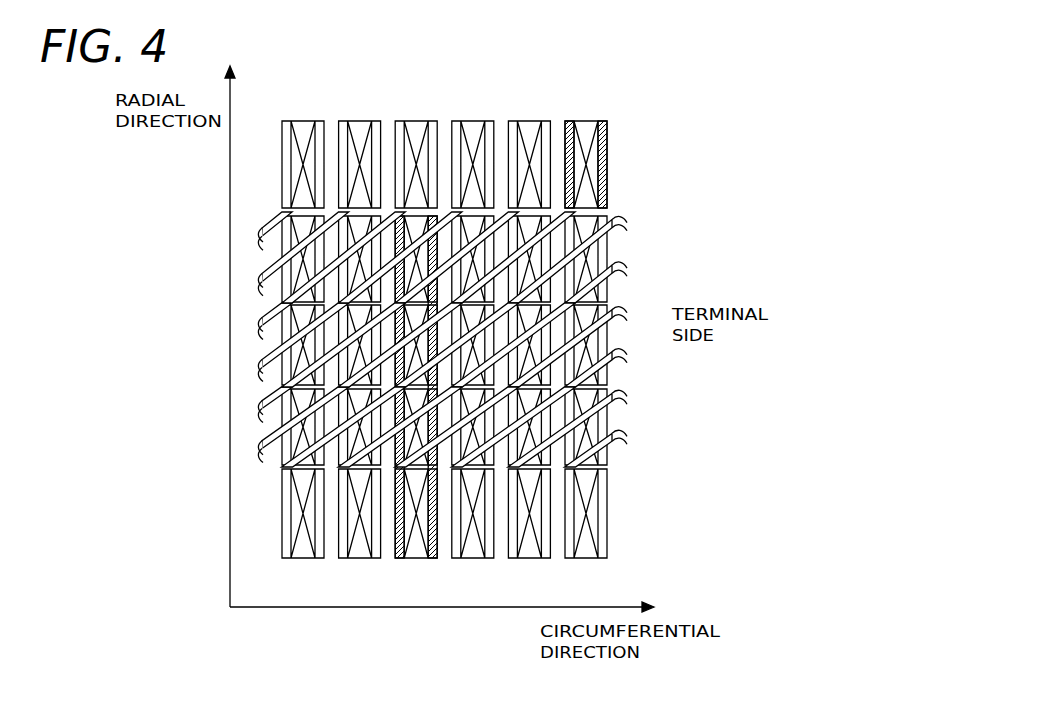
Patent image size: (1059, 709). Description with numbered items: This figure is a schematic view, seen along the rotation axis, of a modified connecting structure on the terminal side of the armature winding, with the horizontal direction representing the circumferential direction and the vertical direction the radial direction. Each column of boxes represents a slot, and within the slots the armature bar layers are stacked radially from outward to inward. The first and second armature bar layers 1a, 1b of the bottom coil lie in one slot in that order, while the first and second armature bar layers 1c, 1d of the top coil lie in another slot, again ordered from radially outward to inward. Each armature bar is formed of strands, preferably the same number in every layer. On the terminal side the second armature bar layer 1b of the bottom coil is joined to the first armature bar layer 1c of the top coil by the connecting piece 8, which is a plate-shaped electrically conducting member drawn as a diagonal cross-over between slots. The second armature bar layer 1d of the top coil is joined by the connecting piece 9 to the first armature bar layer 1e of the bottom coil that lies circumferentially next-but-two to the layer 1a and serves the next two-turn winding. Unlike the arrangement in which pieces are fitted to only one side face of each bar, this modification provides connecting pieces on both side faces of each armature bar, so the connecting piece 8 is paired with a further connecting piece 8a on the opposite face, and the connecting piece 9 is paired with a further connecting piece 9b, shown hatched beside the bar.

The first armature bar layer of the bottom coil 1a is at (413, 128).
The second armature bar layer of the bottom coil 1b is at (435, 210).
The first armature bar layer of the top coil 1c is at (397, 552).
The second armature bar layer of the top coil 1d is at (418, 560).
The first armature bar layer of the bottom coil for the next two-turn winding 1e is at (587, 124).
The connecting piece 8 is at (392, 210).
The connecting piece 8a is at (455, 212).
The connecting piece 9 is at (567, 140).
The connecting piece 9b is at (608, 140).